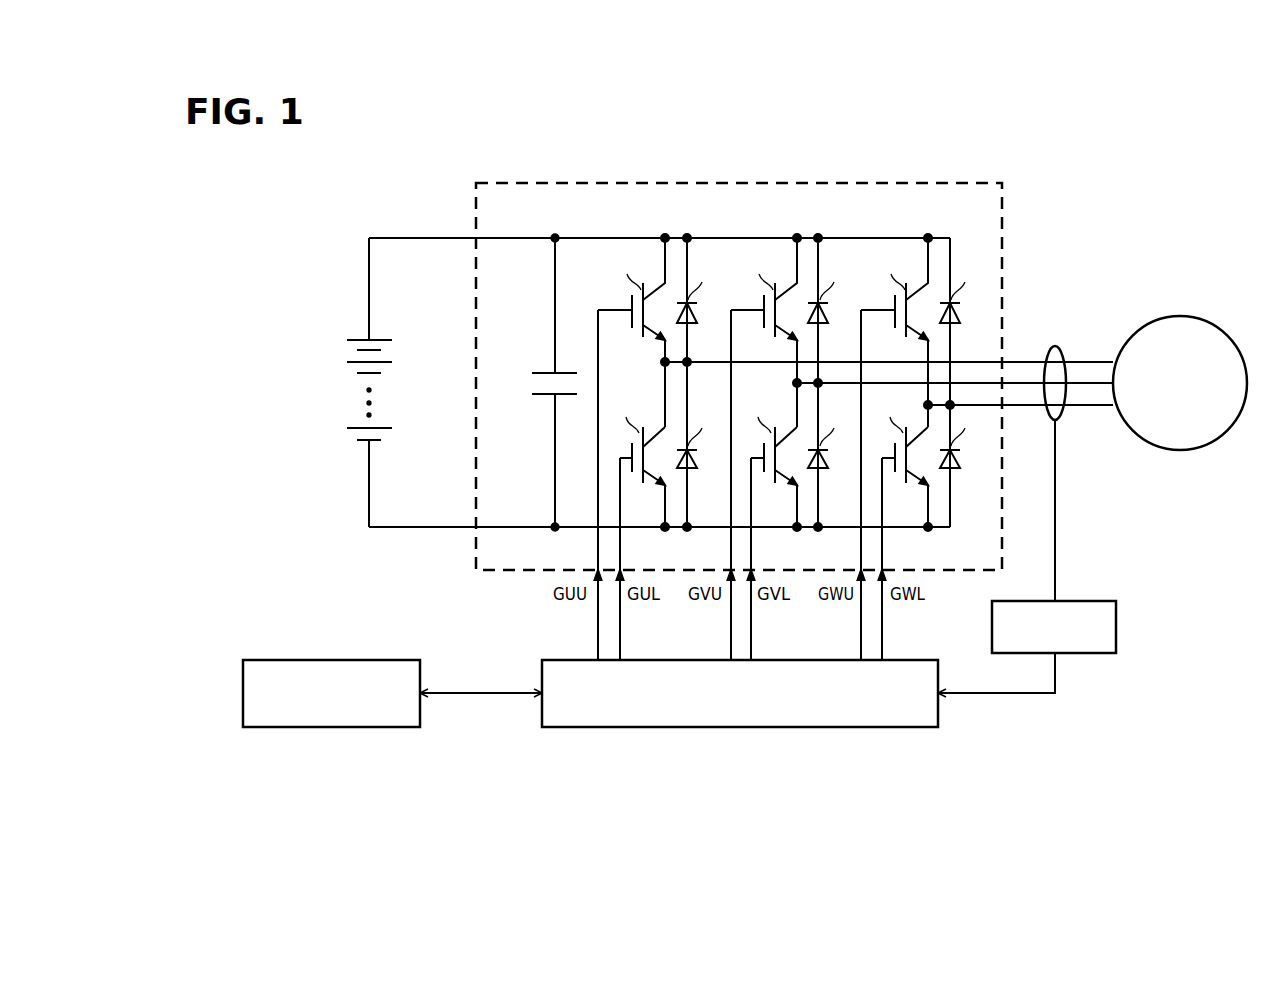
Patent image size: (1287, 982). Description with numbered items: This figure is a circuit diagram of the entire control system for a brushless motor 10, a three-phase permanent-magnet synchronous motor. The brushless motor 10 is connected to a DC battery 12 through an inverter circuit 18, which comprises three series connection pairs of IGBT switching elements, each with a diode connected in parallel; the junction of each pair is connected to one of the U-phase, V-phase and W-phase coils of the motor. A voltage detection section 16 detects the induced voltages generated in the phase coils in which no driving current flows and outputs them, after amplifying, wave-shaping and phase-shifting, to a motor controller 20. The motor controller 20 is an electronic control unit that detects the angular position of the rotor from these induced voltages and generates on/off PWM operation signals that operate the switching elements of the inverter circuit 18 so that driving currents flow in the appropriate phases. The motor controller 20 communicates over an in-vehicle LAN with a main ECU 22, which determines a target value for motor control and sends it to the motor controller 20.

The brushless motor 10 is at (1183, 317).
The DC battery 12 is at (357, 340).
The voltage detection section 16 is at (1098, 601).
The inverter circuit 18 is at (747, 183).
The motor controller 20 is at (722, 727).
The main electronic control unit 22 is at (325, 727).